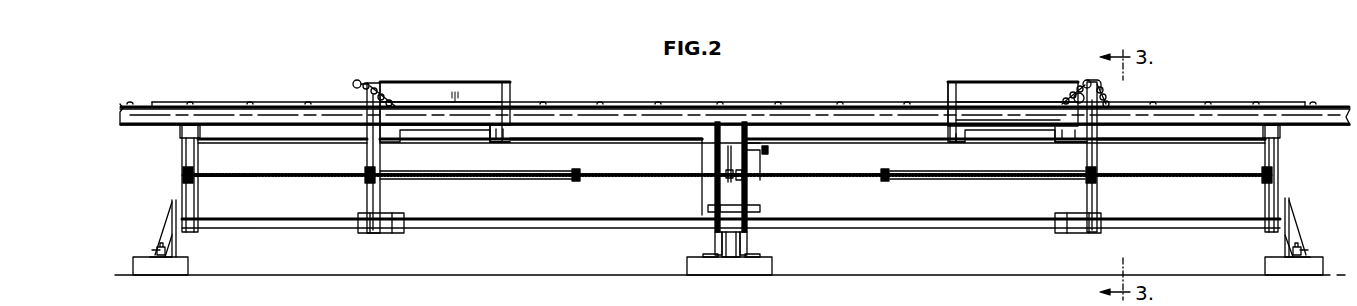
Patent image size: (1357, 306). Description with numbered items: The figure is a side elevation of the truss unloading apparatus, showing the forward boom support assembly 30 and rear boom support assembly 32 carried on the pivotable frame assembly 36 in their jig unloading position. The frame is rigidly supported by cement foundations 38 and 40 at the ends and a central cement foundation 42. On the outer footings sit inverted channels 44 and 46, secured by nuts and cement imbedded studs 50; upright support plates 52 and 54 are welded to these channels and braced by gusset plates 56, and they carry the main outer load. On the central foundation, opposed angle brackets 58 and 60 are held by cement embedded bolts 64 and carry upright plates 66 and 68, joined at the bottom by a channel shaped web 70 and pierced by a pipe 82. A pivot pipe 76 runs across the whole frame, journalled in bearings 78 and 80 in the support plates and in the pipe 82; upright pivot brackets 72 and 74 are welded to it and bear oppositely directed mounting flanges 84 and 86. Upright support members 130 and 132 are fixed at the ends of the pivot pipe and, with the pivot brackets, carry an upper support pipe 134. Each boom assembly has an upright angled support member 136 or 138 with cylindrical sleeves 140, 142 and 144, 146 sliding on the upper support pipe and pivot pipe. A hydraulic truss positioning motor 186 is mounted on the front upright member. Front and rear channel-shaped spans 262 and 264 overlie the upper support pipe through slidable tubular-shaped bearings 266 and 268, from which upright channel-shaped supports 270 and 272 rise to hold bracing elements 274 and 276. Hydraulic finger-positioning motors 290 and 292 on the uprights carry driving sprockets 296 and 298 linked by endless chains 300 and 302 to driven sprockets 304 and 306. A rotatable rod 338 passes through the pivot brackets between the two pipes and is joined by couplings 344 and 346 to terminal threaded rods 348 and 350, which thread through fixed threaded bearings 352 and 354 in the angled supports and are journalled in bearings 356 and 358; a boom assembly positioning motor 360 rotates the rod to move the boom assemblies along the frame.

The forward boom support assembly 30 is at (1033, 96).
The rear boom support assembly 32 is at (437, 132).
The pivotable frame assembly 36 is at (565, 258).
The cement foundation 38 is at (1301, 278).
The cement foundation 40 is at (182, 277).
The cement foundation 42 is at (743, 268).
The inverted channel 44 is at (1310, 252).
The inverted channel 46 is at (152, 253).
The cement imbedded studs 50 is at (158, 240).
The upright support plate 52 is at (1282, 246).
The upright support plate 54 is at (177, 247).
The gusset plates 56 is at (168, 222).
The angle bracket 58 is at (720, 249).
The angle bracket 60 is at (746, 251).
The cement embedded bolts 64 is at (710, 252).
The upright plate 66 is at (755, 209).
The upright plate 68 is at (715, 207).
The channel shaped web 70 is at (726, 259).
The upright pivot bracket 72 is at (750, 163).
The upright pivot bracket 74 is at (715, 185).
The pivot pipe 76 is at (555, 217).
The bearing 78 is at (1294, 211).
The bearing 80 is at (166, 207).
The pipe 82 is at (740, 200).
The mounting flange 84 is at (750, 205).
The mounting flange 86 is at (702, 167).
The upright support member 130 is at (1263, 158).
The upright support member 132 is at (199, 157).
The upper support pipe 134 is at (590, 145).
The upright angled support member 136 is at (1097, 156).
The upright angled support member 138 is at (363, 157).
The cylindrical sleeve 140 is at (1073, 148).
The cylindrical sleeve 142 is at (1062, 206).
The cylindrical sleeve 144 is at (384, 153).
The cylindrical sleeve 146 is at (396, 213).
The hydraulic truss positioning motor 186 is at (1108, 88).
The front channel-shaped span 262 is at (988, 132).
The rear channel-shaped span 264 is at (474, 130).
The tubular-shaped bearing 266 is at (948, 154).
The tubular-shaped bearing 268 is at (503, 143).
The upright channel-shaped support 270 is at (945, 94).
The upright channel-shaped support 272 is at (512, 98).
The bracing element 274 is at (972, 82).
The bracing element 276 is at (395, 82).
The front hydraulic finger-positioning motor 290 is at (1060, 102).
The rear hydraulic finger-positioning motor 292 is at (395, 100).
The driving sprocket 296 is at (1044, 132).
The driving sprocket 298 is at (396, 108).
The endless chain 300 is at (362, 93).
The endless chain 302 is at (1076, 82).
The driven sprocket 304 is at (1078, 84).
The driven sprocket 306 is at (360, 82).
The rotatable rod 338 is at (612, 182).
The coupling 344 is at (885, 180).
The coupling 346 is at (578, 171).
The terminal threaded rod 348 is at (950, 180).
The terminal threaded rod 350 is at (473, 181).
The fixed threaded bearing 352 is at (1095, 187).
The fixed threaded bearing 354 is at (363, 194).
The bearing 356 is at (1276, 170).
The bearing 358 is at (187, 172).
The boom assembly positioning motor 360 is at (773, 150).